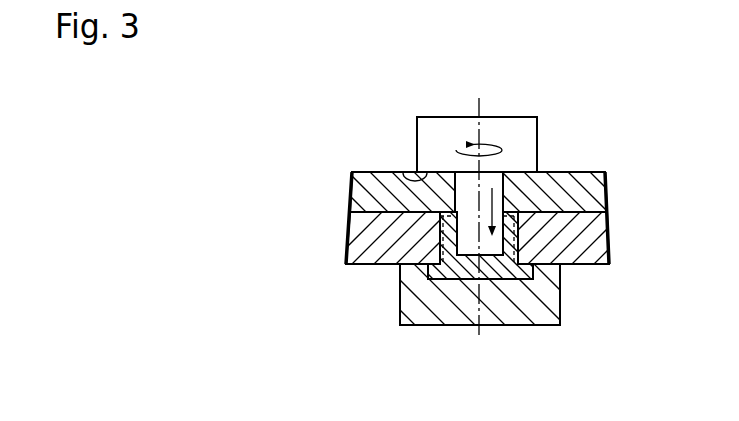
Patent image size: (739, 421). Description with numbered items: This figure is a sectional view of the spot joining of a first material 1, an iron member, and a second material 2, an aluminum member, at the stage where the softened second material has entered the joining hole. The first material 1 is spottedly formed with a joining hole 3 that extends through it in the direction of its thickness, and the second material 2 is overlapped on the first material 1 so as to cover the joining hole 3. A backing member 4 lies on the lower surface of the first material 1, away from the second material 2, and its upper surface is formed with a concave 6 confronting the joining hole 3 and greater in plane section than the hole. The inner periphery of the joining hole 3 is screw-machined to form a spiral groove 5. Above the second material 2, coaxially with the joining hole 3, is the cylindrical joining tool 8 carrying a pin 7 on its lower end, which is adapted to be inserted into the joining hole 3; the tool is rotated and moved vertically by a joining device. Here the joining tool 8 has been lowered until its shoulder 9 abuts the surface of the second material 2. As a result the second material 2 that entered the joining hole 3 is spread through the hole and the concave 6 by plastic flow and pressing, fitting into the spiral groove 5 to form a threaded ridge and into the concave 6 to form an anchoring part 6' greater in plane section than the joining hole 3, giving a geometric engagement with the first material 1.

The first material 1 is at (350, 246).
The second material 2 is at (355, 190).
The joining hole 3 is at (455, 268).
The backing member 4 is at (415, 297).
The spiral groove 5 is at (499, 255).
The concave 6 is at (389, 257).
The anchoring part 6' is at (574, 274).
The pin 7 is at (492, 187).
The joining tool 8 is at (527, 125).
The shoulder 9 is at (400, 172).